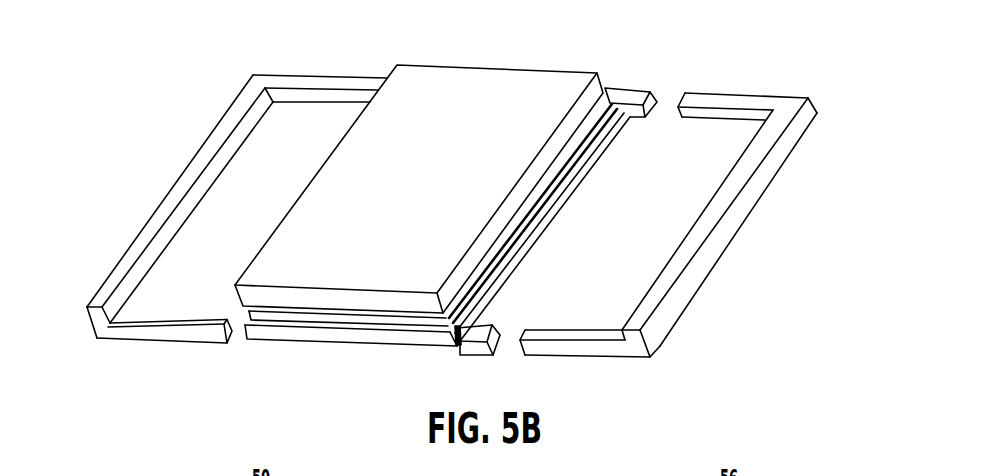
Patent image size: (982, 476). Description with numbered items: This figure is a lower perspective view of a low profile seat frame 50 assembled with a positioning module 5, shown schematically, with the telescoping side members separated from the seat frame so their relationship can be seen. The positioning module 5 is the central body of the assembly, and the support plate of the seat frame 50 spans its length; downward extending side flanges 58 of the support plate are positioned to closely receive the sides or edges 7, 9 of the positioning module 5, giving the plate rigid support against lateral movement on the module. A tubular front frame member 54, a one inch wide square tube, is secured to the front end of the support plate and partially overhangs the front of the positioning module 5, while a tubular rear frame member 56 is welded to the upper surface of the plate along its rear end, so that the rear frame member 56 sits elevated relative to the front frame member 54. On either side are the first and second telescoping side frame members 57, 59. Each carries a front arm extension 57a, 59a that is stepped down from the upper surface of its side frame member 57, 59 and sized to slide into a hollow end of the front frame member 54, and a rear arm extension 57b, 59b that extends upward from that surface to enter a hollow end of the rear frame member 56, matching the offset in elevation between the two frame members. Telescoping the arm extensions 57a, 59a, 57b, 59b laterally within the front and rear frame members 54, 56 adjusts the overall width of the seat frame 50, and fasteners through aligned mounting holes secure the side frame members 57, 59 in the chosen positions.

The positioning module 5 is at (510, 93).
The side or edge of the positioning module 7 is at (237, 300).
The side or edge of the positioning module 9 is at (533, 212).
The seat frame 50 is at (148, 95).
The front frame member 54 is at (620, 90).
The rear frame member 56 is at (472, 348).
The first telescoping side frame member 57 is at (169, 200).
The front arm extension 57a is at (323, 82).
The rear arm extension 57b is at (153, 337).
The side flange 58 is at (620, 137).
The second telescoping side frame member 59 is at (727, 229).
The front arm extension 59a is at (752, 98).
The rear arm extension 59b is at (585, 357).